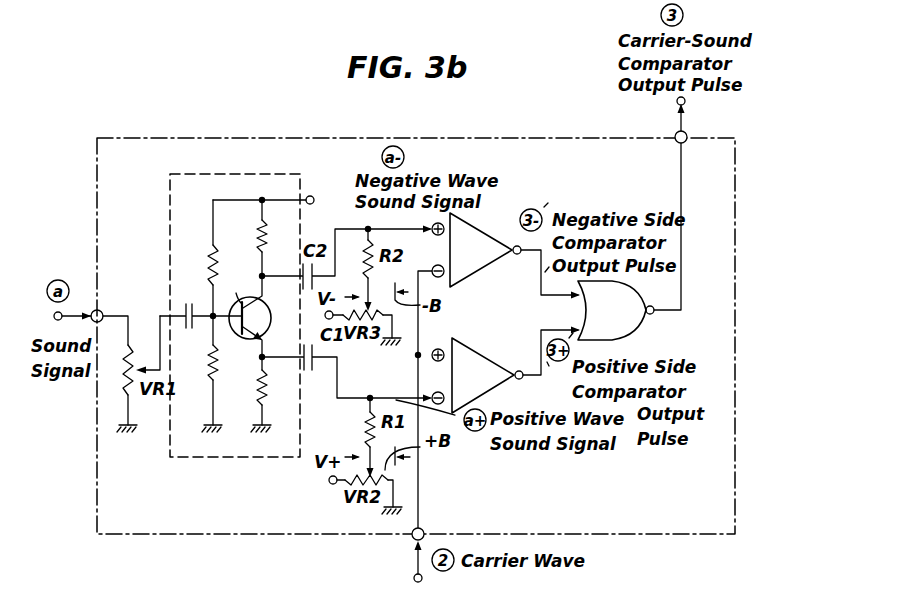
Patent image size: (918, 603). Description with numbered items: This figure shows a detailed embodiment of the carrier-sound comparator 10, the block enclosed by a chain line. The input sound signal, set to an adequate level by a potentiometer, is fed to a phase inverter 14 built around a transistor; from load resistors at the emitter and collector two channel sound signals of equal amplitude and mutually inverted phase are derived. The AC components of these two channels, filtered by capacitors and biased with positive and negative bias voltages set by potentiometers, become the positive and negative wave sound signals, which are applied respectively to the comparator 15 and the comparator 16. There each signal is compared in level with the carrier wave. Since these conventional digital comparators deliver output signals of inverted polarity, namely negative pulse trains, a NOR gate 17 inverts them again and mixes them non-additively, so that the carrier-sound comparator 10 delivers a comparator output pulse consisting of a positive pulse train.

The carrier-sound comparator 10 is at (269, 138).
The phase inverter 14 is at (298, 174).
The comparator 15 is at (490, 352).
The comparator 16 is at (481, 231).
The NOR gate 17 is at (633, 322).